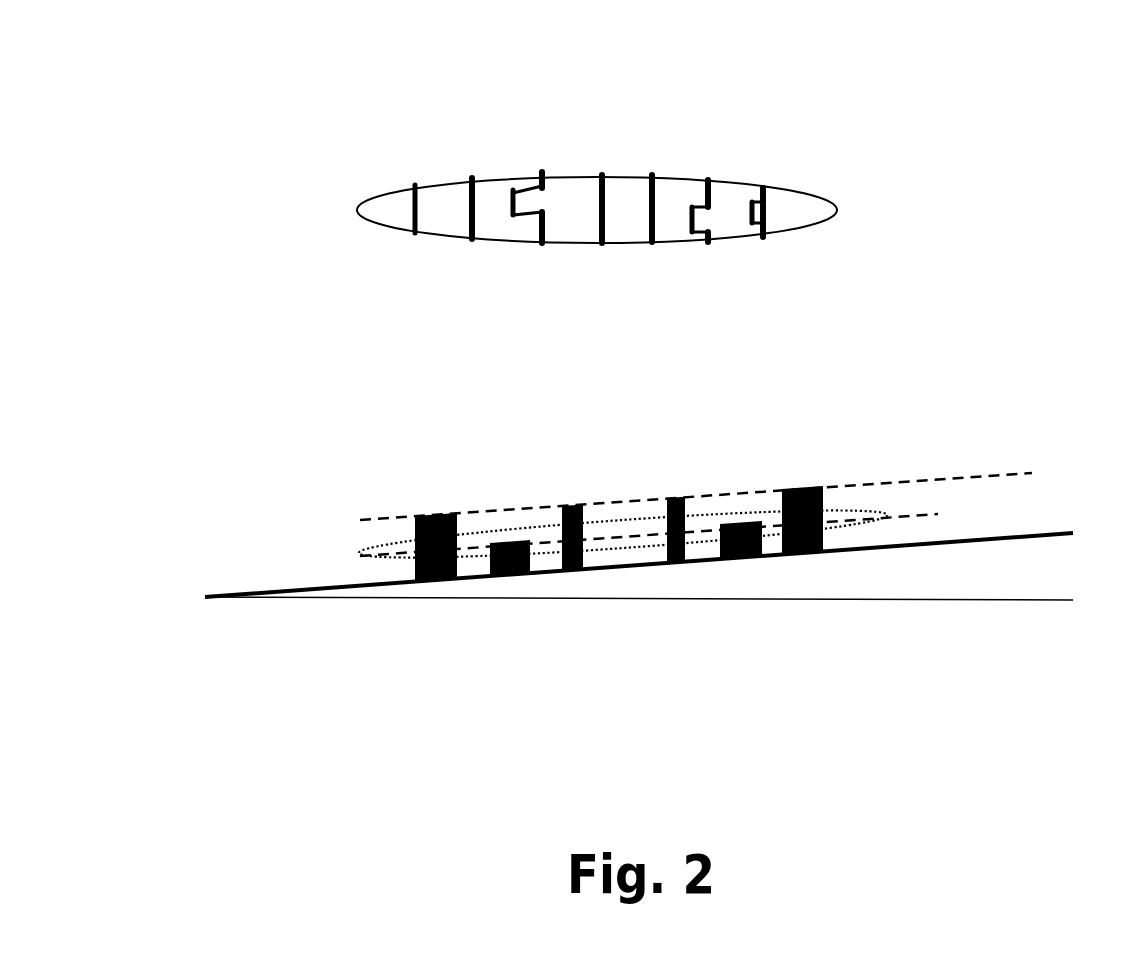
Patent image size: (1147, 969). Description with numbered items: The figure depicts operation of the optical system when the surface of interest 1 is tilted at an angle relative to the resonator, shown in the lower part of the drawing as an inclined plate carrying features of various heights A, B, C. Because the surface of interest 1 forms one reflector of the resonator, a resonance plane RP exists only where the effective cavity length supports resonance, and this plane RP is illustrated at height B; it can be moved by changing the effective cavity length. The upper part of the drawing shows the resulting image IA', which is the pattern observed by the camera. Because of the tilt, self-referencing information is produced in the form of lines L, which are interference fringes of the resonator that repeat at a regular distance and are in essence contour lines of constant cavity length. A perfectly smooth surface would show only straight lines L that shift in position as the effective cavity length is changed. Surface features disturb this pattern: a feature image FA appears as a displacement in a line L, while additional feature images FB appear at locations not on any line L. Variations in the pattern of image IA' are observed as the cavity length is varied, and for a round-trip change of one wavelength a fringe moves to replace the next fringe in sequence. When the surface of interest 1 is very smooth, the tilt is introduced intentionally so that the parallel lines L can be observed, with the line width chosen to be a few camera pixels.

The surface of interest 1 is at (378, 462).
The lines L is at (620, 153).
The feature images FB is at (744, 178).
The feature image FA is at (787, 201).
The image IA' is at (578, 192).
The resonance plane RP is at (360, 557).
The height A is at (879, 643).
The height B is at (947, 637).
The height C is at (1012, 628).